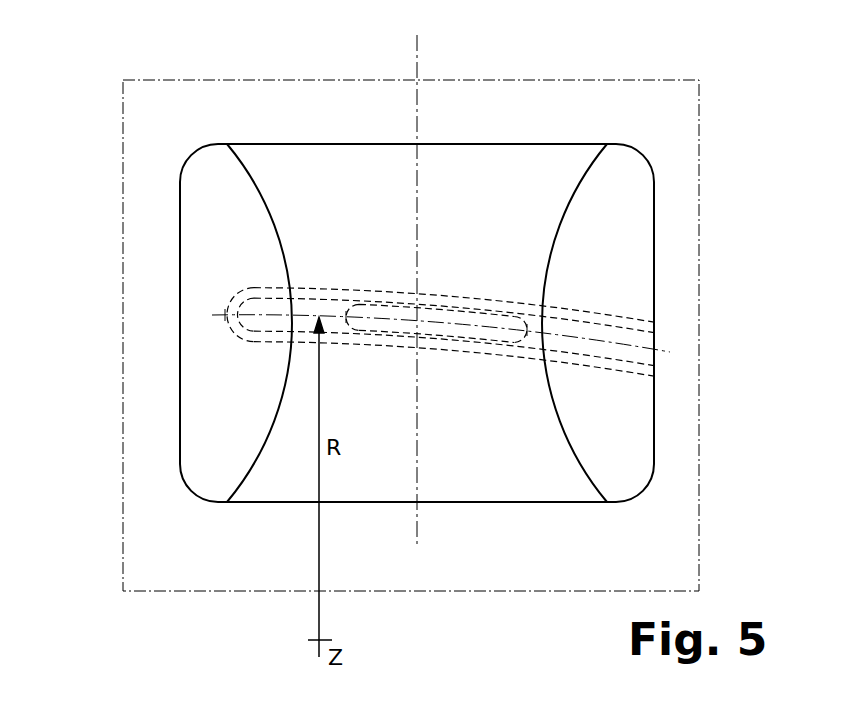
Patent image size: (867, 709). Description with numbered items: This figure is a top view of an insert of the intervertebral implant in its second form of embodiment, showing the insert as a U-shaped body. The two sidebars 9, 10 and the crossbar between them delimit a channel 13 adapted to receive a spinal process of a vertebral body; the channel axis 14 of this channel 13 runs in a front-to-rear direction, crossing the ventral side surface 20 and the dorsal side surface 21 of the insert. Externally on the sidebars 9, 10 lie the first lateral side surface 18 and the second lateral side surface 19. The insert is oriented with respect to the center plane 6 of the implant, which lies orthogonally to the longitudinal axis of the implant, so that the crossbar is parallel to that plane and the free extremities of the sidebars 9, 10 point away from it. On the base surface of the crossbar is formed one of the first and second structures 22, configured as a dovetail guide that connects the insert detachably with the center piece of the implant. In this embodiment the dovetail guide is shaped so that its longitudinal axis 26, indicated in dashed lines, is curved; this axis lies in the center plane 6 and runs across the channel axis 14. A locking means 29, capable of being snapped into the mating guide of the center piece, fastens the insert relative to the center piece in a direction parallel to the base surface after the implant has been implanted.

The center plane 6 is at (162, 120).
The sidebar 9 is at (228, 407).
The sidebar 10 is at (610, 227).
The channel 13 is at (503, 197).
The channel axis 14 is at (417, 108).
The first lateral side surface 18 is at (180, 243).
The second lateral side surface 19 is at (654, 267).
The ventral side surface 20 is at (313, 144).
The dorsal side surface 21 is at (515, 502).
The first and second structures 22 is at (232, 338).
The longitudinal axis 26 is at (447, 323).
The locking means 29 is at (573, 345).